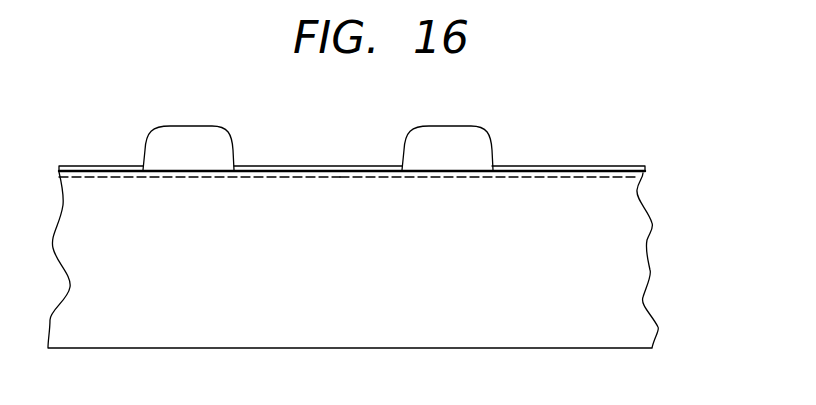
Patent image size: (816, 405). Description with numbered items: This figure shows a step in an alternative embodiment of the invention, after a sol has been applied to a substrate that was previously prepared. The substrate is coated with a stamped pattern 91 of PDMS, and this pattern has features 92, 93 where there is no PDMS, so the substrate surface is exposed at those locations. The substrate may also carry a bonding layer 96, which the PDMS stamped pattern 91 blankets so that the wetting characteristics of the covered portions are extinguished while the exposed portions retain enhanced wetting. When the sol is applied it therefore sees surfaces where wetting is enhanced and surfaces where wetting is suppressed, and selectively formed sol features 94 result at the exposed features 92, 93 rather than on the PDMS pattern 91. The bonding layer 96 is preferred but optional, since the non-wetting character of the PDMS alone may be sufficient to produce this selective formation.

The stamped pattern 91 is at (98, 166).
The feature 92 is at (187, 173).
The feature 93 is at (450, 172).
The sol feature 94 is at (168, 126).
The bonding layer 96 is at (643, 175).